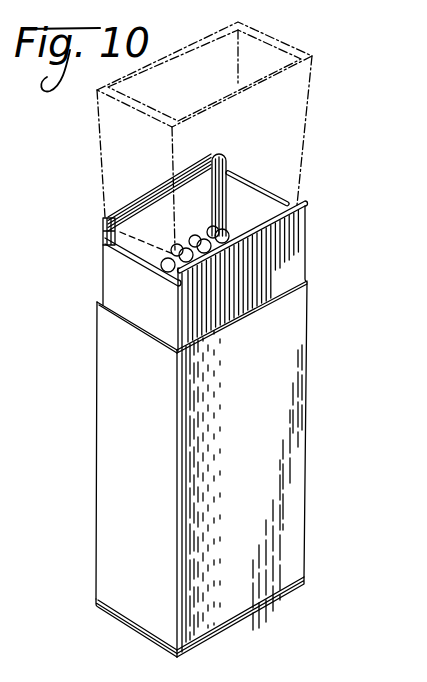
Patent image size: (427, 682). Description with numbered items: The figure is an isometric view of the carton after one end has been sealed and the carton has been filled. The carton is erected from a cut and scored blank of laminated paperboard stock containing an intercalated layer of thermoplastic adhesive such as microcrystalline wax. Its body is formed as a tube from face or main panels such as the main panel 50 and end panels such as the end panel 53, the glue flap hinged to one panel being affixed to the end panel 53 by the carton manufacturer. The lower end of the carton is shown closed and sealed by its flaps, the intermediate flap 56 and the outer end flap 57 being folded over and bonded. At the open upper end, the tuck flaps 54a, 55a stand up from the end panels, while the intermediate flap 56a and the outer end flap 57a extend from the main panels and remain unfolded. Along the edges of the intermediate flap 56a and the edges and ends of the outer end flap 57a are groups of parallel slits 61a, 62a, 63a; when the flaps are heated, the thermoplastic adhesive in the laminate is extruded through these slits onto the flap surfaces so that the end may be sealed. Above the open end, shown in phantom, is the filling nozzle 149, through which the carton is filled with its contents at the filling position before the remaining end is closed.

The filling nozzle 149 is at (305, 121).
The main panel 50 is at (287, 425).
The end panel 53 is at (105, 447).
The tuck flap 54a is at (258, 202).
The tuck flap 55a is at (118, 285).
The intermediate flap 56 is at (110, 610).
The intermediate flap 56a is at (267, 260).
The outer end flap 57 is at (123, 630).
The outer end flap 57a is at (140, 223).
The group of parallel slits 61a is at (225, 168).
The group of parallel slits 62a is at (152, 200).
The group of parallel slits 63a is at (102, 237).